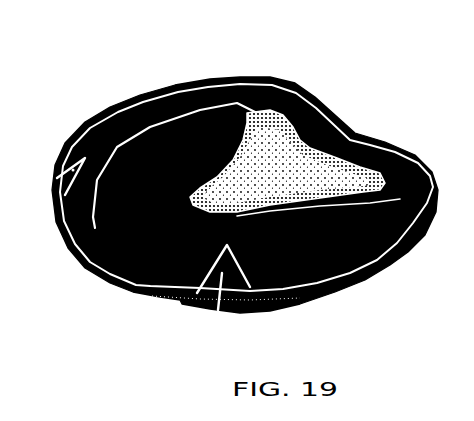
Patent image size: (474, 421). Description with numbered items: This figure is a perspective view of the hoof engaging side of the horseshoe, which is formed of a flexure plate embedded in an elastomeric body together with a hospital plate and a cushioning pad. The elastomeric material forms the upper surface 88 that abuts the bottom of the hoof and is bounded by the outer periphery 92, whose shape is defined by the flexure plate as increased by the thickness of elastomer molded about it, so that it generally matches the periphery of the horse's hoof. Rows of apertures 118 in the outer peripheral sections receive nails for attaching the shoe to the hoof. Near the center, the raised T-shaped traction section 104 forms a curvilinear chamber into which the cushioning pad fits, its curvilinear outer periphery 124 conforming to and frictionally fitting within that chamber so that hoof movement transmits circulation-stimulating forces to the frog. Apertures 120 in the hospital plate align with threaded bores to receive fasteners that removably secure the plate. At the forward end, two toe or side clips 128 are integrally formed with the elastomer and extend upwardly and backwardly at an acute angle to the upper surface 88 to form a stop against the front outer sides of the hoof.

The upper surface 88 is at (200, 80).
The outer periphery 92 is at (377, 277).
The raised T-shaped traction section 104 is at (337, 150).
The apertures 118 is at (157, 95).
The apertures 120 is at (54, 180).
The curvilinear outer periphery 124 is at (295, 163).
The toe or side clips 128 is at (217, 310).